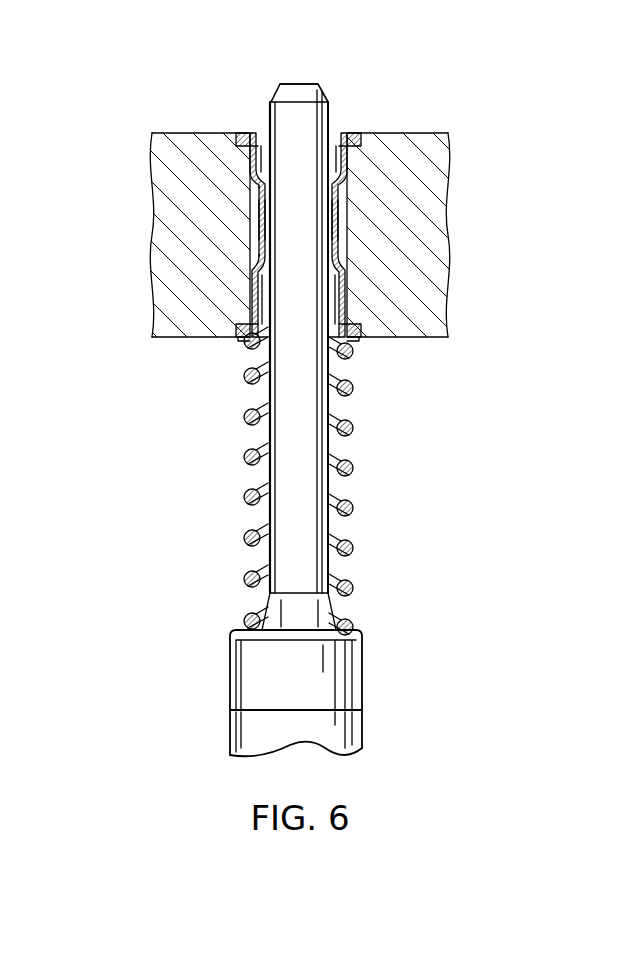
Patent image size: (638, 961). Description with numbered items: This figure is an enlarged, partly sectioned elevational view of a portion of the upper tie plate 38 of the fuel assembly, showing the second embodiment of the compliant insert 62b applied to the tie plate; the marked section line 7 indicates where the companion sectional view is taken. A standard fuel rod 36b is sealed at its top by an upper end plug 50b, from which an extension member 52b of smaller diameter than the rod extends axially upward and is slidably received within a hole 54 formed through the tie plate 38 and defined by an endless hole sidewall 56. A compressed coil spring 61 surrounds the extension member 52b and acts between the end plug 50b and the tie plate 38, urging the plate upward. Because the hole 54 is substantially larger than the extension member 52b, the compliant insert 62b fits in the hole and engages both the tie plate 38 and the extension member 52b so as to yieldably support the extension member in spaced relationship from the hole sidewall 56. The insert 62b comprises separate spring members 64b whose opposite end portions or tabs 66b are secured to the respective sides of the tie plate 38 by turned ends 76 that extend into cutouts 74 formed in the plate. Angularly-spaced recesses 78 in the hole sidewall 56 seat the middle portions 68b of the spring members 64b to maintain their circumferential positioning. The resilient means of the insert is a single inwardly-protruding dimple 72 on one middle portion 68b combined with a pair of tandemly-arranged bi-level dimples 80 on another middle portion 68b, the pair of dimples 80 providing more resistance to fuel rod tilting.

The upper tie plate 38 is at (178, 133).
The extension member 52b is at (307, 493).
The hole 54 is at (312, 182).
The middle portion 68b is at (264, 133).
The tab 66b is at (247, 133).
The cutout 74 is at (240, 139).
The turned end 76 is at (251, 149).
The tandemly-arranged dimples 80 is at (256, 280).
The recess 78 is at (257, 281).
The dimple 72 is at (345, 233).
The spring member 64b is at (265, 312).
The hole sidewall 56 is at (303, 338).
The compliant insert 62b is at (233, 352).
The coil spring 61 is at (353, 546).
The upper end plug 50b is at (344, 661).
The standard fuel rod 36b is at (362, 731).
The section line 7- 7 is at (207, 114).